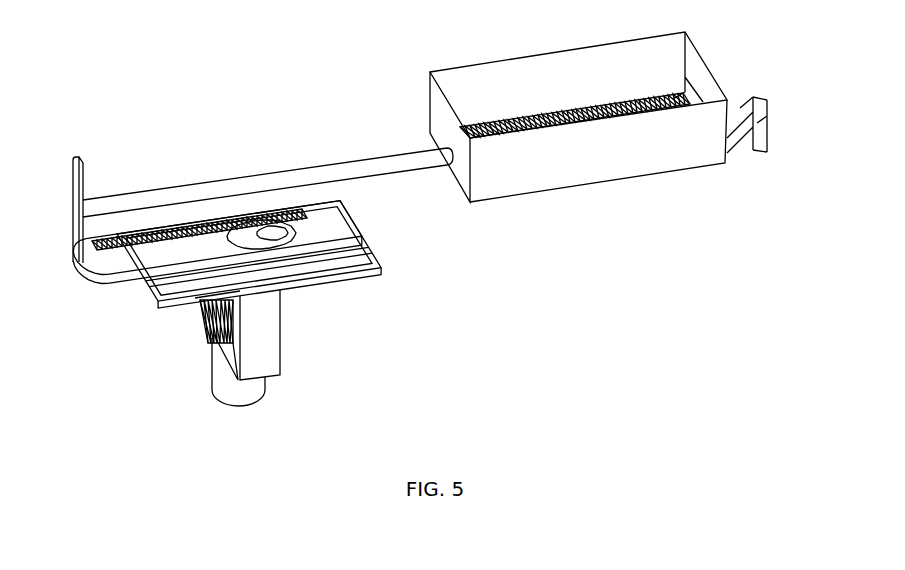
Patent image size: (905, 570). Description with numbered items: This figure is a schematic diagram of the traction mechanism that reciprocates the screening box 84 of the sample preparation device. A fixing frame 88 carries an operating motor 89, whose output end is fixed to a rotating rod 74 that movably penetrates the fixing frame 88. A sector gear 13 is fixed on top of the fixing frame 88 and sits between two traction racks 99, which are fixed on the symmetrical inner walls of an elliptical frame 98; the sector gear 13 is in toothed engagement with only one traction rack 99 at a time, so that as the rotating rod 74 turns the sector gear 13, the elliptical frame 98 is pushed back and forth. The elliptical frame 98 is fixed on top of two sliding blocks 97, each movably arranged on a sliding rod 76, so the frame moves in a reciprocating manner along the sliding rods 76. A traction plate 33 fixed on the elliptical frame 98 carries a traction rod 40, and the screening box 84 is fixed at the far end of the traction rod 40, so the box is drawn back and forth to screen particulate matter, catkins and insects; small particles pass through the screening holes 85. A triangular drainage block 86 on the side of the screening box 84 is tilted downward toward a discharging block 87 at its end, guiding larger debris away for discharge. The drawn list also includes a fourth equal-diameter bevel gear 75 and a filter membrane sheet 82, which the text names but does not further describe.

The sector gear 13 is at (227, 223).
The traction plate 33 is at (77, 193).
The traction rod 40 is at (215, 220).
The rotating rod 74 is at (217, 330).
The fourth equal-diameter bevel gear 75 is at (217, 323).
The sliding rod 76 is at (318, 280).
The filter membrane sheet 82 is at (350, 273).
The screening box 84 is at (523, 68).
The screening hole 85 is at (633, 102).
The drainage block 86 is at (757, 112).
The discharging block 87 is at (770, 140).
The fixing frame 88 is at (273, 340).
The operating motor 89 is at (233, 393).
The sliding block 97 is at (197, 300).
The elliptical frame 98 is at (97, 282).
The traction rack 99 is at (98, 240).